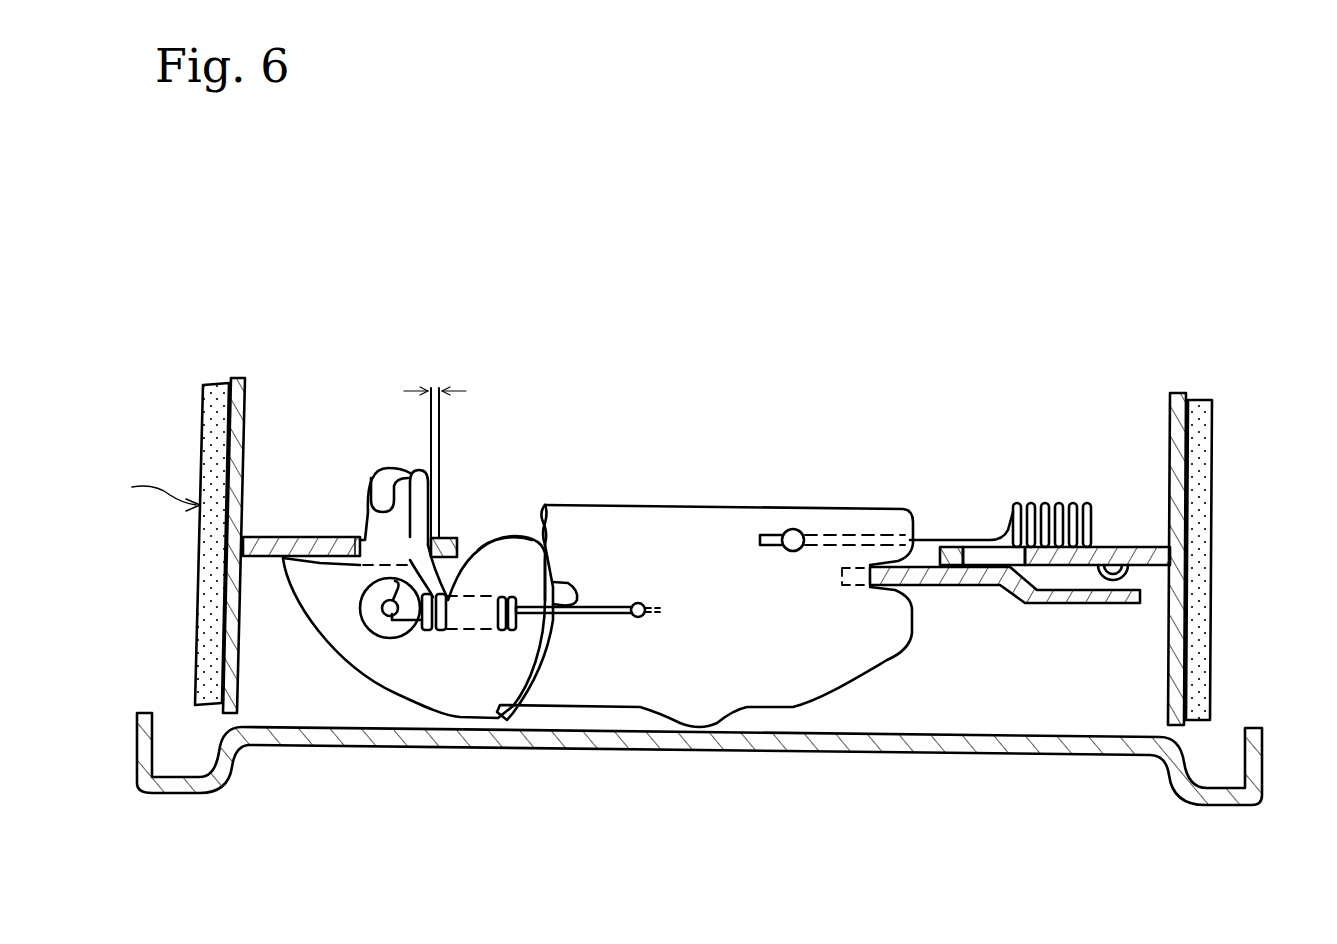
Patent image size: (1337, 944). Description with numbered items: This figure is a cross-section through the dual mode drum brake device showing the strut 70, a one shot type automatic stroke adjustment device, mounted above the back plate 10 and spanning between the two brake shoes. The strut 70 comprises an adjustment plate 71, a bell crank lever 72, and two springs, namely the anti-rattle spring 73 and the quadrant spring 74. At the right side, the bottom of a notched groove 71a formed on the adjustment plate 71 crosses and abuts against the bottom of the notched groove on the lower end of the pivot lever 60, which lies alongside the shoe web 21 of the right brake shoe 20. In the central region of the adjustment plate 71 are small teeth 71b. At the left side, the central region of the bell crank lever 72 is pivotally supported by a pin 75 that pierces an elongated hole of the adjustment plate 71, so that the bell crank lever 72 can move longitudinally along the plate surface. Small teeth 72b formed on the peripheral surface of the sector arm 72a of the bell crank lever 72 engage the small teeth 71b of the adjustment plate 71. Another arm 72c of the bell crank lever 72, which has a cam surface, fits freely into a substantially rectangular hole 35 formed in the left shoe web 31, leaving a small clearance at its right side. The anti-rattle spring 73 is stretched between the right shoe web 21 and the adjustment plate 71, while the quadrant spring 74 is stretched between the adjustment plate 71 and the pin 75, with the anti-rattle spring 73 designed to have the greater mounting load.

The back plate 10 is at (860, 750).
The brake shoe 20 is at (1219, 486).
The shoe web 21 is at (1163, 567).
The shoe web 31 is at (285, 537).
The rectangular hole 35 is at (408, 470).
The pivot lever 60 is at (1054, 604).
The strut 70 is at (744, 505).
The adjustment plate 71 is at (702, 710).
The notched groove 71a is at (910, 580).
The small teeth 71b is at (543, 527).
The bell crank lever 72 is at (492, 537).
The sector arm 72a is at (507, 540).
The small teeth 72b is at (580, 560).
The arm 72c is at (367, 513).
The anti-rattle spring 73 is at (1010, 530).
The quadrant spring 74 is at (510, 632).
The pin 75 is at (383, 623).